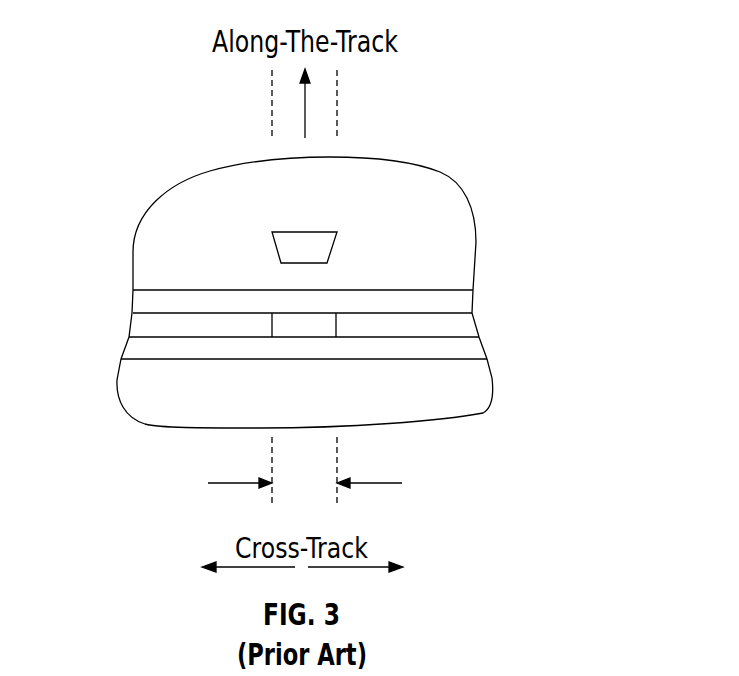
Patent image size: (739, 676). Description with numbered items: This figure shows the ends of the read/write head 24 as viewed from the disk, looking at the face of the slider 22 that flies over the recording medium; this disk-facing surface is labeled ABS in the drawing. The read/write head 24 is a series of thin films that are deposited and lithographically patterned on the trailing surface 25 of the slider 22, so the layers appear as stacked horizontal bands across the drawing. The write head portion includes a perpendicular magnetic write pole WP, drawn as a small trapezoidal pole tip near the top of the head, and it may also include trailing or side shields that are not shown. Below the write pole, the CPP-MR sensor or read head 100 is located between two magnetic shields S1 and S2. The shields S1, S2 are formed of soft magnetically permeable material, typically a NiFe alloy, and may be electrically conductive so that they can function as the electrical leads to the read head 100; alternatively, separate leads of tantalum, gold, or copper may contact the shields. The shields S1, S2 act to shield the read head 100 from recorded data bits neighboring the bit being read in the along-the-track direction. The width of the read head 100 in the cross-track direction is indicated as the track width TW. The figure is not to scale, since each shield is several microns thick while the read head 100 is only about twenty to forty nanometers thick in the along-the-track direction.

The slider 22 is at (148, 418).
The read/write head 24 is at (77, 230).
The trailing surface 25 is at (131, 358).
The read head 100 is at (325, 327).
The magnetic shield S1 is at (187, 353).
The magnetic shield S2 is at (463, 303).
The perpendicular magnetic write pole WP is at (330, 250).
The air bearing surface ABS is at (191, 191).
The track width TW is at (305, 470).